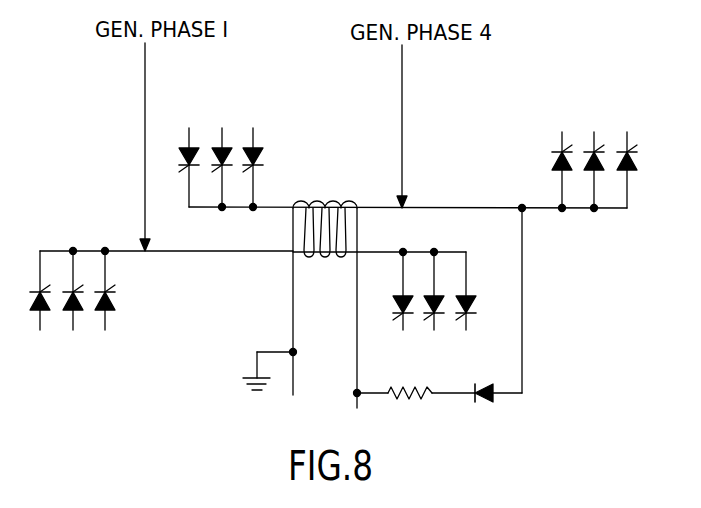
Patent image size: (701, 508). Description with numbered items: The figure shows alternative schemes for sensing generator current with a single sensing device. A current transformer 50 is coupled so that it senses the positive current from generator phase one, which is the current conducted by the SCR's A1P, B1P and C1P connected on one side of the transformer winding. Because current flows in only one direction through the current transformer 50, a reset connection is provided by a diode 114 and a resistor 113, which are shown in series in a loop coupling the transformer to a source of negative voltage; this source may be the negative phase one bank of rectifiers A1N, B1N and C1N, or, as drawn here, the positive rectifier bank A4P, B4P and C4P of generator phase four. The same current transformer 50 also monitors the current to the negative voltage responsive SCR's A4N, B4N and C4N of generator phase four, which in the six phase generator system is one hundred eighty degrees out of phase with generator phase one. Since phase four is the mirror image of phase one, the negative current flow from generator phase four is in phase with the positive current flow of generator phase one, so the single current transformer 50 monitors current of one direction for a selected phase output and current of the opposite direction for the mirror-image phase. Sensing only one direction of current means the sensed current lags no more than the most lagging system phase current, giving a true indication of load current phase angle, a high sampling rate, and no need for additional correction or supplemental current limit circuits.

The current transformer 50 is at (333, 203).
The resistor 113 is at (424, 401).
The diode 114 is at (480, 397).
The negative voltage responsive SCR of generator phase 4 A4N is at (178, 158).
The negative voltage responsive SCR of generator phase 4 B4N is at (225, 160).
The negative voltage responsive SCR of generator phase 4 C4N is at (270, 160).
The positive rectifier of generator phase 4 A4P is at (642, 160).
The positive rectifier of generator phase 4 B4P is at (593, 162).
The positive rectifier of generator phase 4 C4P is at (548, 162).
The negative phase 1 rectifier A1N is at (31, 300).
The negative phase 1 rectifier B1N is at (74, 299).
The negative phase 1 rectifier C1N is at (115, 299).
The positive SCR of generator phase 1 A1P is at (476, 303).
The positive SCR of generator phase 1 B1P is at (436, 302).
The positive SCR of generator phase 1 C1P is at (395, 302).